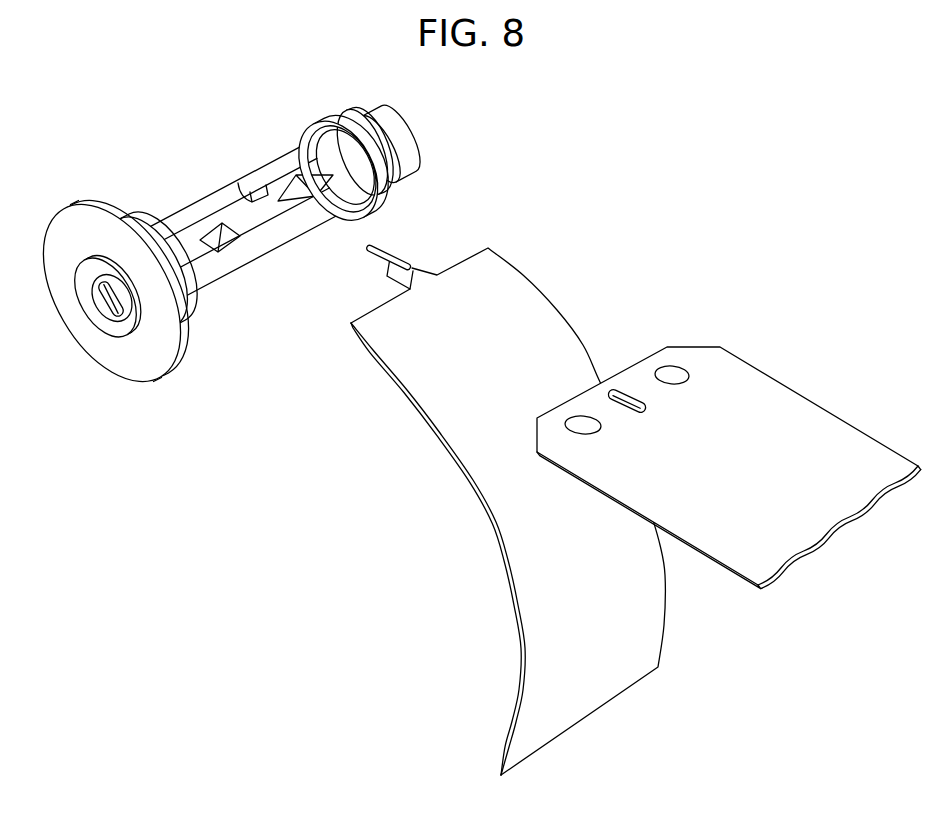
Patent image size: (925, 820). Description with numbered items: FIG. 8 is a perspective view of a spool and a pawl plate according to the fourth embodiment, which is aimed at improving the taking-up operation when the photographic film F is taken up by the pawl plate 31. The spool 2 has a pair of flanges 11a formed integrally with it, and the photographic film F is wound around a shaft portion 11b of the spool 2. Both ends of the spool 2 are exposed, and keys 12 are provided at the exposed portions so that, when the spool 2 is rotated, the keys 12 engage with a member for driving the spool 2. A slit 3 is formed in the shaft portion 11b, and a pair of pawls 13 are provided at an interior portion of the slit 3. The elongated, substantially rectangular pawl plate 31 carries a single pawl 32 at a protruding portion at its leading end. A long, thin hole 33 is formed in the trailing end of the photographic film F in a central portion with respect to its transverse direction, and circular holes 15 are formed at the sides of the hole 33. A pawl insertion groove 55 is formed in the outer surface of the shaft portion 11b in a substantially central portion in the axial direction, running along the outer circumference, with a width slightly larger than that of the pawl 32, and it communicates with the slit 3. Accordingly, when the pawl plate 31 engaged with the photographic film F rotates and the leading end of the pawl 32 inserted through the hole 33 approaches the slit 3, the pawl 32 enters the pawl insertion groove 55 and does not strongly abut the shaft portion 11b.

The spool 2 is at (172, 158).
The flange 11a is at (73, 220).
The shaft portion 11b is at (210, 205).
The key 12 is at (107, 302).
The pawl 13 is at (287, 202).
The pawl insertion groove 55 is at (245, 170).
The slit 3 is at (320, 170).
The pawl plate 31 is at (477, 463).
The pawl 32 is at (380, 247).
The hole 33 is at (622, 393).
The circular hole 15 is at (677, 375).
The photographic film F is at (812, 415).